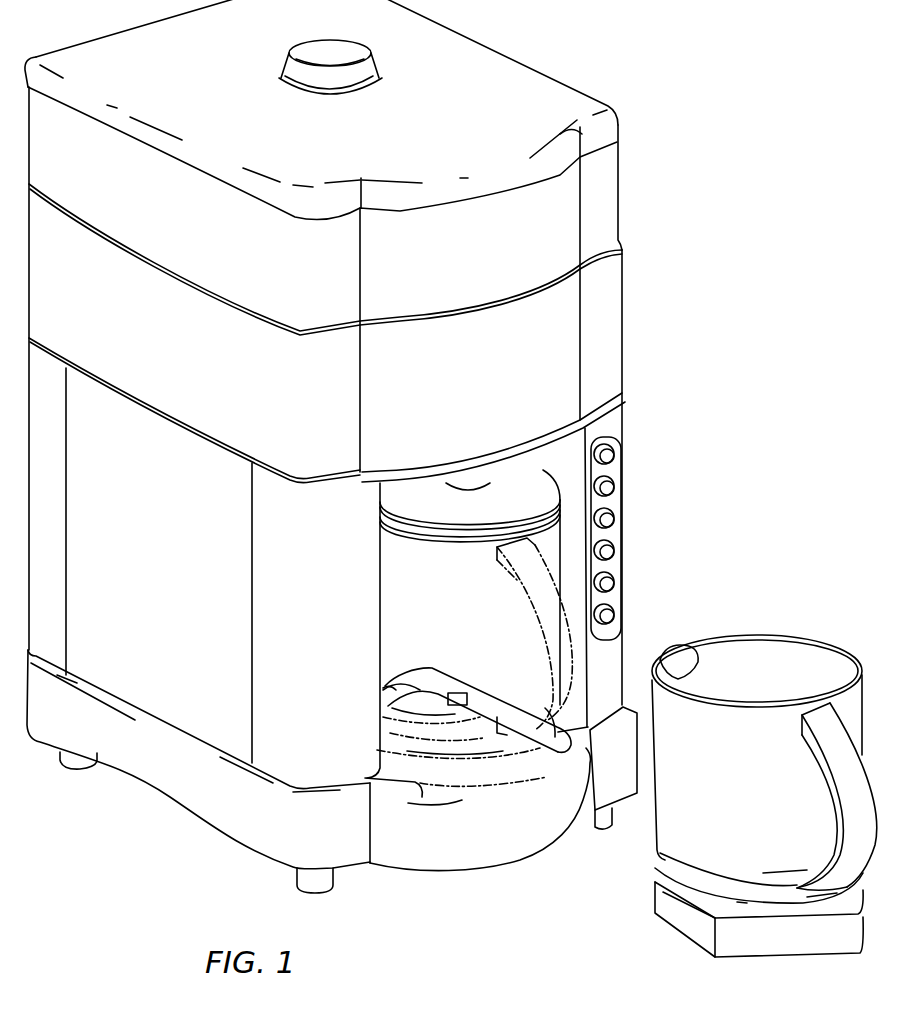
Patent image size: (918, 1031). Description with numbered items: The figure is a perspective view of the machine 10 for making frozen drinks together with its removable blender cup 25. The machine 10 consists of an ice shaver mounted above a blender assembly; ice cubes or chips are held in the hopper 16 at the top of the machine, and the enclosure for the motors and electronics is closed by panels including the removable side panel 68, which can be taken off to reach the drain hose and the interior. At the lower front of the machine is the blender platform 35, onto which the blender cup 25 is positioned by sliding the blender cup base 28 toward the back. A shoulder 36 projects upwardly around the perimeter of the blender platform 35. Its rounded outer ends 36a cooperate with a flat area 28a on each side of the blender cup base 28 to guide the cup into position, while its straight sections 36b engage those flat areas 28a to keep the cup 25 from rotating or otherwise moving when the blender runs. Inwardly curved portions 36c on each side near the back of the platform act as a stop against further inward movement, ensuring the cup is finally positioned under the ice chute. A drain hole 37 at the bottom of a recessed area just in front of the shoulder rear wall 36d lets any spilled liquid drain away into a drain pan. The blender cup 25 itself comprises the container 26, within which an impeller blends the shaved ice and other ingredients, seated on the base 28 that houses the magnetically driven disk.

The machine 10 is at (668, 292).
The hopper 16 is at (460, 262).
The side panel 68 is at (154, 535).
The blender platform 35 is at (468, 773).
The shoulder 36 is at (452, 674).
The rounded outer ends 36a is at (578, 750).
The straight sections 36b is at (392, 707).
The inwardly curved portions 36c is at (455, 694).
The shoulder rear wall 36d is at (393, 684).
The drain hole 37 is at (393, 697).
The blender cup 25 is at (833, 637).
The container 26 is at (730, 776).
The blender cup base 28 is at (752, 942).
The flat area 28a is at (688, 925).